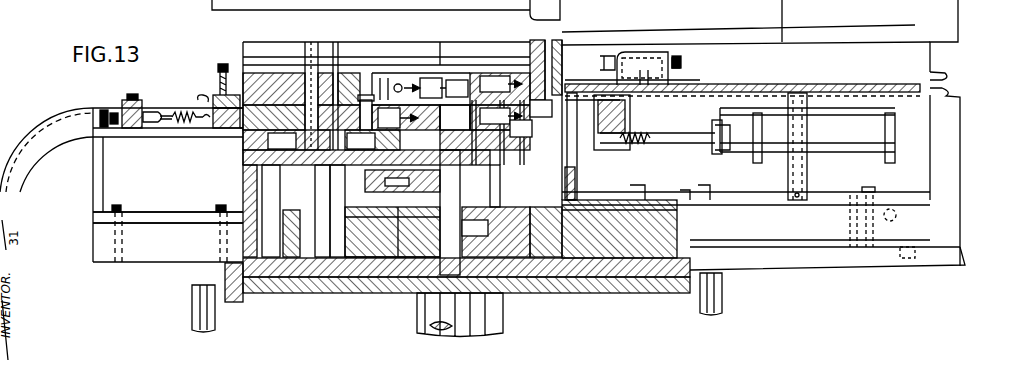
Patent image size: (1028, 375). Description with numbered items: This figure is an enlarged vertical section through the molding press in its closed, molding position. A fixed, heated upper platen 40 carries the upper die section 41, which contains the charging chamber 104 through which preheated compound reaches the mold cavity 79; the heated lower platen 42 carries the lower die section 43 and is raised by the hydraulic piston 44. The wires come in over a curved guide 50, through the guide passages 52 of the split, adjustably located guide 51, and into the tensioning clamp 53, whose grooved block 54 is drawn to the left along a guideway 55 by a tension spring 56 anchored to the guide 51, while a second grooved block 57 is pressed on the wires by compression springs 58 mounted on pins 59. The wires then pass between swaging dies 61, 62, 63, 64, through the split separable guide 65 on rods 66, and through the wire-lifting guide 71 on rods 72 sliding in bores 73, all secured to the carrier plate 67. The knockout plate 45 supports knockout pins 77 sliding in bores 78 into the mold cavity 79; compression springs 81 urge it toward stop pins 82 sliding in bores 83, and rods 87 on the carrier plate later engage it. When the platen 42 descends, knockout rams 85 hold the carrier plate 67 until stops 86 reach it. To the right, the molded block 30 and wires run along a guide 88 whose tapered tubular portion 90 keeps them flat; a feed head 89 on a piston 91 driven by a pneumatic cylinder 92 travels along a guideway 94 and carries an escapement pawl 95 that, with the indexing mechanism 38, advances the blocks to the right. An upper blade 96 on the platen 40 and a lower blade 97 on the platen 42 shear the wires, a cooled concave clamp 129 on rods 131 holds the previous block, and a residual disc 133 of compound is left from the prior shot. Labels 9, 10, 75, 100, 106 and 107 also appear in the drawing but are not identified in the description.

The arrow indicator 9 is at (439, 88).
The arrow indicator 10 is at (398, 118).
The block 30 is at (622, 82).
The indexing mechanism 38 is at (651, 148).
The fixed upper platen 40 is at (277, 73).
The upper die section 41 is at (410, 73).
The lower platen 42 is at (596, 265).
The lower die section 43 is at (248, 126).
The hydraulic piston 44 is at (503, 313).
The knockout plate 45 is at (490, 330).
The curved guide 50 is at (44, 128).
The split, adjustably located guide 51 is at (147, 108).
The guide passages 52 is at (129, 100).
The tensioning clamp 53 is at (186, 124).
The grooved block 54 is at (222, 130).
The guideway 55 is at (245, 100).
The tension spring 56 is at (163, 125).
The grooved block 57 is at (194, 97).
The compression springs 58 is at (216, 94).
The pins 59 is at (222, 64).
The swaging die 61 is at (290, 75).
The swaging die 62 is at (240, 172).
The swaging die 63 is at (320, 78).
The swaging die 64 is at (282, 141).
The split, separable guide 65 is at (356, 74).
The rods 66 is at (365, 180).
The carrier plate 67 is at (915, 215).
The wire-lifting guide 71 is at (412, 104).
The rods 72 is at (402, 210).
The bores 73 is at (428, 205).
The block 75 is at (512, 232).
The knockout pins 77 is at (455, 117).
The bores 78 is at (485, 122).
The mold cavity 79 is at (458, 104).
The compression springs 81 is at (345, 195).
The stop pins 82 is at (402, 200).
The bores 83 is at (372, 295).
The knockout rams 85 is at (215, 325).
The stops 86 is at (232, 219).
The rods 87 is at (387, 200).
The guide 88 is at (752, 84).
The feed head 89 is at (681, 61).
The tapered, tubular portion 90 is at (594, 85).
The piston 91 is at (672, 142).
The pneumatic cylinder 92 is at (834, 120).
The guideway 94 is at (650, 97).
The escapement pawl 95 is at (588, 118).
The upper blade 96 is at (950, 78).
The lower blade 97 is at (948, 93).
The cover plate 100 is at (940, 30).
The charging chamber 104 is at (451, 50).
The arrow indicator 106 is at (500, 83).
The arrow indicator 107 is at (500, 115).
The concave clamp 129 is at (536, 62).
The rods 131 is at (570, 85).
The residual disc 133 is at (557, 85).